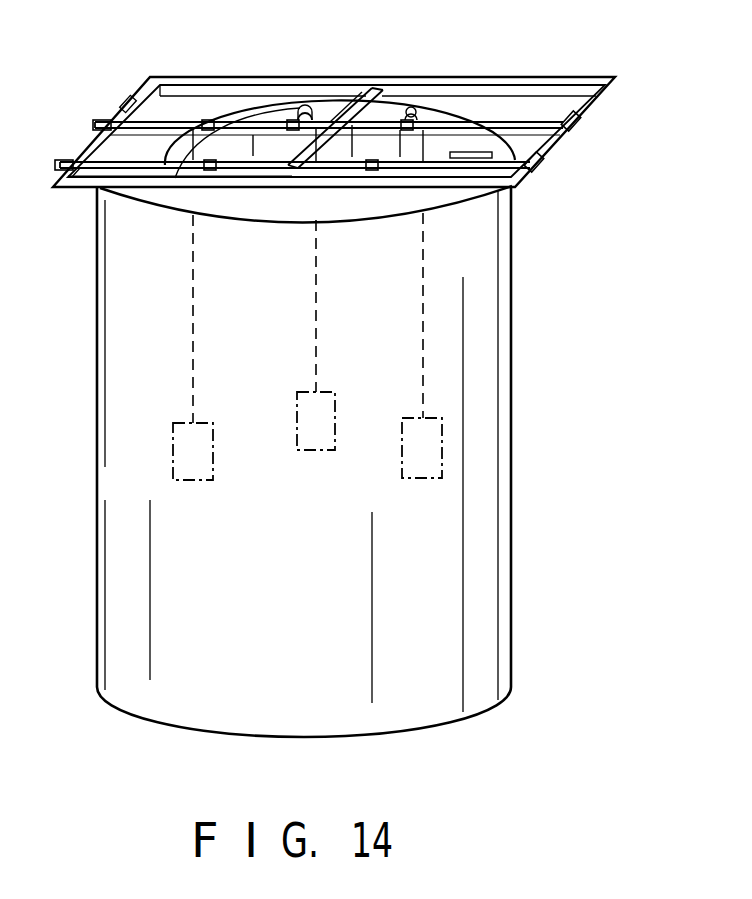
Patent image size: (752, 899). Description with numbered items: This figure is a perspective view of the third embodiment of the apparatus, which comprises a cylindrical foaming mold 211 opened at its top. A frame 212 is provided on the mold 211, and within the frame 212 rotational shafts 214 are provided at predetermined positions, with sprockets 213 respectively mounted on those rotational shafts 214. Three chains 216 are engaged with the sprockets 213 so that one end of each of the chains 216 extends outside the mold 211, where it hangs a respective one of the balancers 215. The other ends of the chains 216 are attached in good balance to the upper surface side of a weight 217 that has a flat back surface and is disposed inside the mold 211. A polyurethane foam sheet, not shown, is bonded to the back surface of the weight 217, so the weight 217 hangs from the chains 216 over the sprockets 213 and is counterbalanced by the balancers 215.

The cylindrical foaming mold 211 is at (512, 409).
The frame 212 is at (557, 78).
The sprockets 213 is at (212, 178).
The rotational shafts 214 is at (497, 120).
The balancers 215 is at (178, 461).
The chains 216 is at (303, 104).
The weight 217 is at (358, 148).